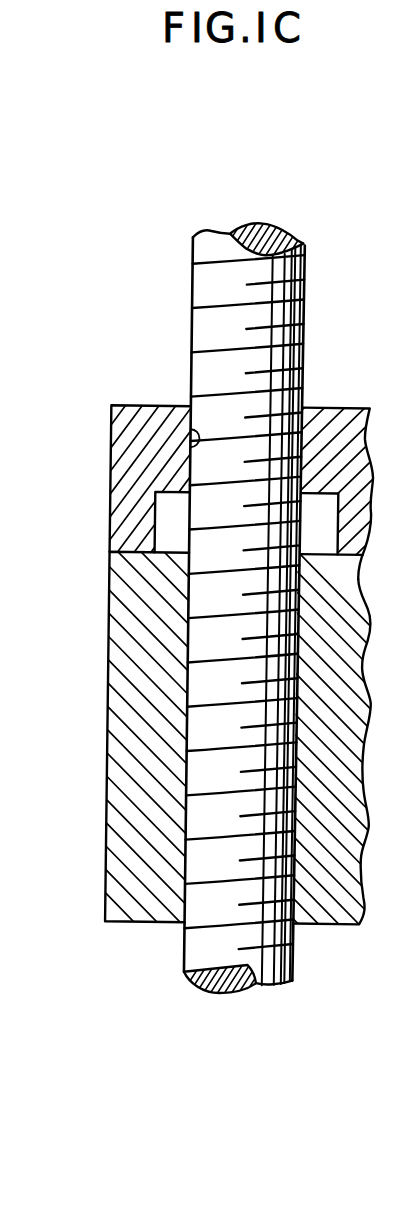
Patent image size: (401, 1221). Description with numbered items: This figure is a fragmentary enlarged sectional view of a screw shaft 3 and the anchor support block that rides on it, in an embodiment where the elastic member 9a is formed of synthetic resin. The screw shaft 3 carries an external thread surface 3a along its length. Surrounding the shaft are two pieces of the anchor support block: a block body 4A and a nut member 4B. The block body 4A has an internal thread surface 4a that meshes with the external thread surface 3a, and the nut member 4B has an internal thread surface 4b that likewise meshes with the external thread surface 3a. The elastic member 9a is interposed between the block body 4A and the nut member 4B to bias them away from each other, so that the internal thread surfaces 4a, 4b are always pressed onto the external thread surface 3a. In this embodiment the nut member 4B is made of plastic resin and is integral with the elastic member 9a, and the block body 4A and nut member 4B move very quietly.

The screw shaft 3 is at (292, 226).
The external thread surface 3a is at (188, 434).
The block body 4A is at (109, 689).
The nut member 4B is at (108, 500).
The internal thread surface 4a is at (188, 736).
The internal thread surface 4b is at (188, 432).
The elastic member 9a is at (108, 545).